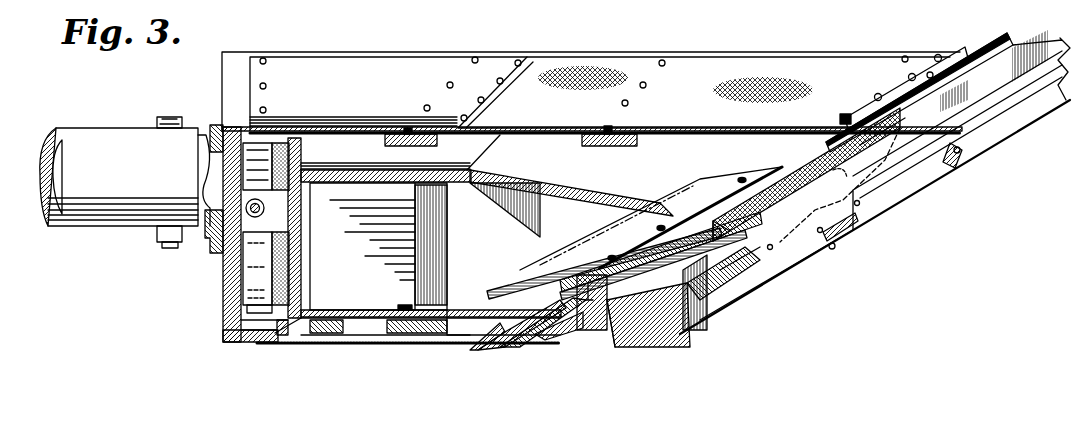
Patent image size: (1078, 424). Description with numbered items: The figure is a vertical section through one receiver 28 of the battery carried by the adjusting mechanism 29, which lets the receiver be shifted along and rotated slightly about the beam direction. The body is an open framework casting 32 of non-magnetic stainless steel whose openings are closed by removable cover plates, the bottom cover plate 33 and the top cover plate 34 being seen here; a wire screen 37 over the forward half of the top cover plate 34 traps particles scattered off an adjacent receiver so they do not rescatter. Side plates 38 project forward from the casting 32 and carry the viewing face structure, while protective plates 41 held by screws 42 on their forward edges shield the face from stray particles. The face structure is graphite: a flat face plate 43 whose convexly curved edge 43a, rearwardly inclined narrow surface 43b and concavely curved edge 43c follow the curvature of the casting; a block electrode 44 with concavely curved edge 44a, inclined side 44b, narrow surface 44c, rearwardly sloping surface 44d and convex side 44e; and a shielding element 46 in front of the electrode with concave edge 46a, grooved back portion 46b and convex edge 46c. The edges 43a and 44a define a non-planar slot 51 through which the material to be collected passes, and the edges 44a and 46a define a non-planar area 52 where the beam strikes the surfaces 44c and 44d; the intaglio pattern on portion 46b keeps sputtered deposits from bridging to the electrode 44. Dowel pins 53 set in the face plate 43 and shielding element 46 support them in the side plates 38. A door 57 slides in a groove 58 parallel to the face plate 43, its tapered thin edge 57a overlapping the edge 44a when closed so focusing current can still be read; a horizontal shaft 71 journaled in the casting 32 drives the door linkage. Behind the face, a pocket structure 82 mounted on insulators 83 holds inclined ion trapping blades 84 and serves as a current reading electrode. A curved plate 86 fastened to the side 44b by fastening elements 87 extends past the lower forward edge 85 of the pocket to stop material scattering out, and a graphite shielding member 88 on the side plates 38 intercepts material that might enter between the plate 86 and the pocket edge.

The receiver 28 is at (440, 42).
The adjusting mechanism 29 is at (108, 132).
The framework casting 32 is at (221, 319).
The bottom cover plate 33 is at (340, 334).
The top cover plate 34 is at (392, 100).
The wire screen 37 is at (773, 60).
The side plate 38 is at (1057, 62).
The protective plate 41 is at (1037, 112).
The screw 42 is at (962, 160).
The graphite face plate 43 is at (820, 160).
The convexly curved edge of face plate 43a is at (712, 262).
The narrow surface of face plate 43b is at (705, 236).
The concavely curved edge of face plate 43c is at (880, 97).
The graphite block electrode 44 is at (575, 338).
The concavely curved edge of electrode 44a is at (708, 266).
The concavely curved side of electrode 44b is at (660, 250).
The narrow surface of electrode 44c is at (700, 274).
The sloping surface of electrode 44d is at (745, 340).
The convex side of electrode 44e is at (552, 345).
The graphite shielding element 46 is at (650, 350).
The concavely curved edge of shielding element 46a is at (704, 270).
The grooved back surface portion 46b is at (600, 318).
The convex edge of shielding element 46c is at (620, 338).
The slot 51 is at (651, 226).
The non-planar area 52 is at (696, 278).
The dowel pin 53 is at (850, 190).
The door 57 is at (770, 236).
The thin edge of door 57a is at (745, 258).
The groove 58 is at (1015, 44).
The rotatable shaft 71 is at (248, 210).
The pocket structure 82 is at (320, 322).
The insulator 83 is at (285, 143).
The ion trapping blade 84 is at (382, 298).
The lower forward edge of pocket 85 is at (500, 346).
The curved plate 86 is at (520, 292).
The fastening element 87 is at (742, 178).
The shielding member 88 is at (475, 356).